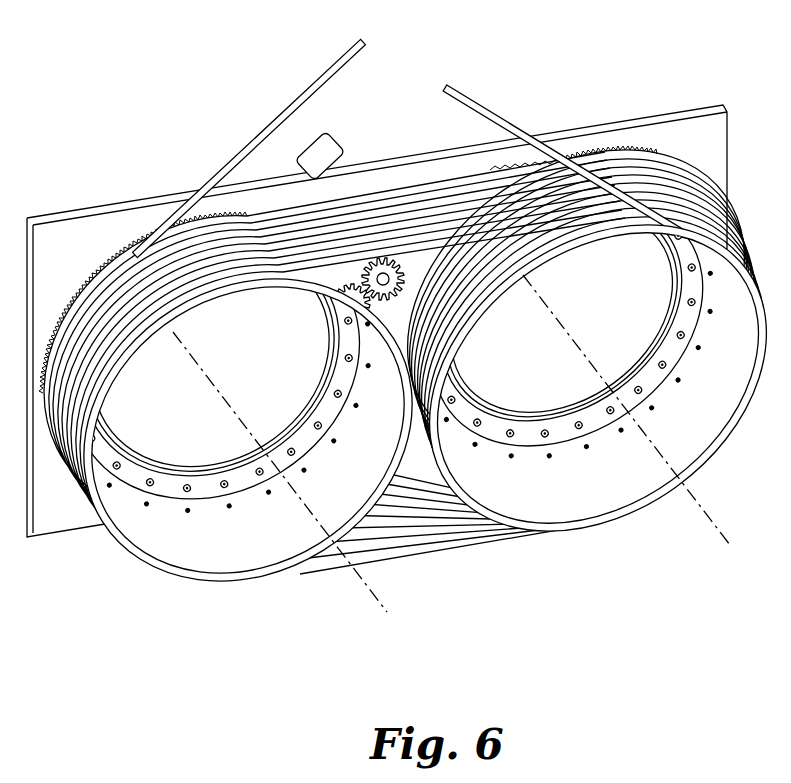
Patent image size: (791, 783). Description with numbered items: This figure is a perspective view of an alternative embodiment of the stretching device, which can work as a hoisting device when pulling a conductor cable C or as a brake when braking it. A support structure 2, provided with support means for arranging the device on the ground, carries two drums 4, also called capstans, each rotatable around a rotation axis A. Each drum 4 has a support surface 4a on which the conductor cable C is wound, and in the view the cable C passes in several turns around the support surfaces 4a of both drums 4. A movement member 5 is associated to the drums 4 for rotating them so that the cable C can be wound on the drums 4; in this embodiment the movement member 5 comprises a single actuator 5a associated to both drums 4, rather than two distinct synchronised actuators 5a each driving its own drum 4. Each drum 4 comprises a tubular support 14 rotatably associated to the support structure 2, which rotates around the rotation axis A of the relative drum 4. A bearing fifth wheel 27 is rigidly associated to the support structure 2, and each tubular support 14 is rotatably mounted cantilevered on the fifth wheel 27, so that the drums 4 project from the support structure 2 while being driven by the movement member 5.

The support structure 2 is at (68, 213).
The conductor cable C is at (413, 208).
The movement member 5 is at (324, 128).
The actuator 5a is at (310, 142).
The drum 4 is at (197, 584).
The support surface 4a is at (307, 276).
The tubular support 14 is at (138, 503).
The bearing fifth wheel 27 is at (633, 363).
The axis A is at (385, 610).